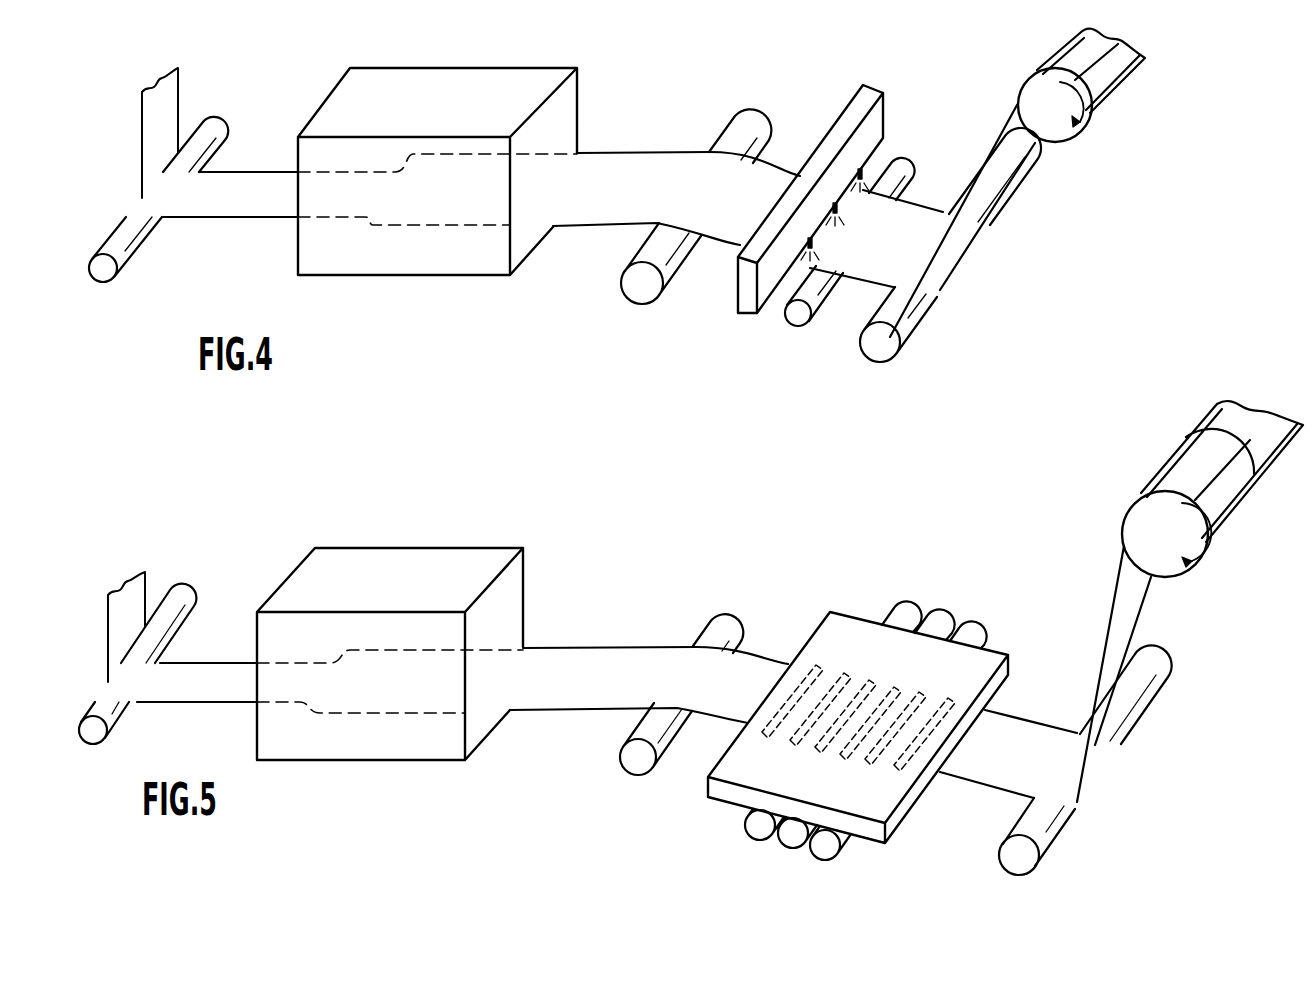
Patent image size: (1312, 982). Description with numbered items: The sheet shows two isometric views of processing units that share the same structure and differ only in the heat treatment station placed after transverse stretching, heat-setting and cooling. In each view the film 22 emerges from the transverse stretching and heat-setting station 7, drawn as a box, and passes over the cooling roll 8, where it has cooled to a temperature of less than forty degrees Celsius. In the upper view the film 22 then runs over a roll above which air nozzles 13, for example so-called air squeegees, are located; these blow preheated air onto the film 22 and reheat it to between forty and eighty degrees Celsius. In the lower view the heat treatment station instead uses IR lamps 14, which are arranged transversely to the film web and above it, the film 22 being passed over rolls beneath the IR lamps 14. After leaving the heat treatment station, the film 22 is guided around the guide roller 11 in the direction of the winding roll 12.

In FIG. 4, the transverse stretching and heat-setting station 7 is at (404, 258).
In FIG. 5, the transverse stretching and heat-setting station 7 is at (392, 740).
In FIG. 4, the cooling roll 8 is at (638, 292).
In FIG. 5, the cooling roll 8 is at (636, 760).
In FIG. 4, the guide roller 11 is at (881, 342).
In FIG. 5, the guide roller 11 is at (1023, 861).
In FIG. 4, the winding roll 12 is at (1037, 93).
In FIG. 5, the winding roll 12 is at (1147, 514).
In FIG. 4, the air nozzles 13 is at (866, 182).
In FIG. 5, the IR lamps 14 is at (847, 672).
In FIG. 4, the film 22 is at (641, 173).
In FIG. 5, the film 22 is at (602, 678).